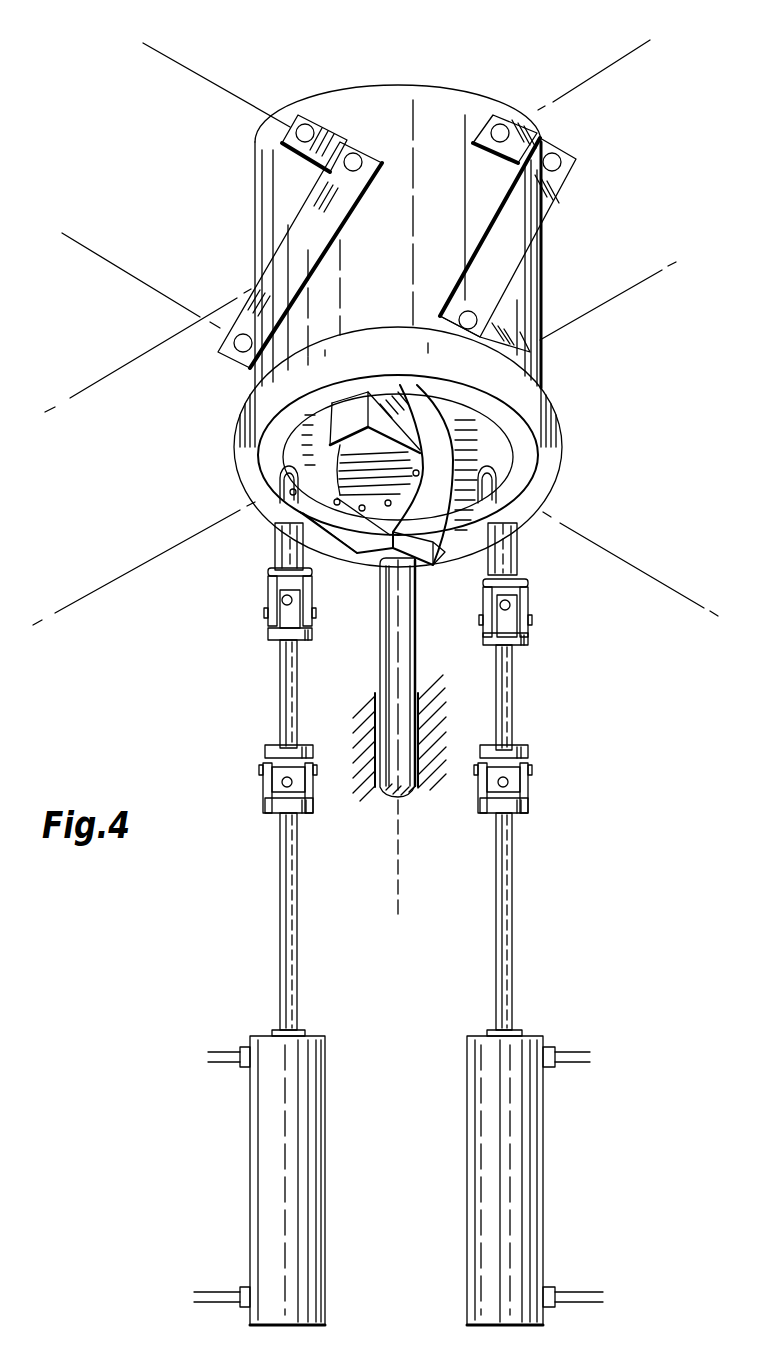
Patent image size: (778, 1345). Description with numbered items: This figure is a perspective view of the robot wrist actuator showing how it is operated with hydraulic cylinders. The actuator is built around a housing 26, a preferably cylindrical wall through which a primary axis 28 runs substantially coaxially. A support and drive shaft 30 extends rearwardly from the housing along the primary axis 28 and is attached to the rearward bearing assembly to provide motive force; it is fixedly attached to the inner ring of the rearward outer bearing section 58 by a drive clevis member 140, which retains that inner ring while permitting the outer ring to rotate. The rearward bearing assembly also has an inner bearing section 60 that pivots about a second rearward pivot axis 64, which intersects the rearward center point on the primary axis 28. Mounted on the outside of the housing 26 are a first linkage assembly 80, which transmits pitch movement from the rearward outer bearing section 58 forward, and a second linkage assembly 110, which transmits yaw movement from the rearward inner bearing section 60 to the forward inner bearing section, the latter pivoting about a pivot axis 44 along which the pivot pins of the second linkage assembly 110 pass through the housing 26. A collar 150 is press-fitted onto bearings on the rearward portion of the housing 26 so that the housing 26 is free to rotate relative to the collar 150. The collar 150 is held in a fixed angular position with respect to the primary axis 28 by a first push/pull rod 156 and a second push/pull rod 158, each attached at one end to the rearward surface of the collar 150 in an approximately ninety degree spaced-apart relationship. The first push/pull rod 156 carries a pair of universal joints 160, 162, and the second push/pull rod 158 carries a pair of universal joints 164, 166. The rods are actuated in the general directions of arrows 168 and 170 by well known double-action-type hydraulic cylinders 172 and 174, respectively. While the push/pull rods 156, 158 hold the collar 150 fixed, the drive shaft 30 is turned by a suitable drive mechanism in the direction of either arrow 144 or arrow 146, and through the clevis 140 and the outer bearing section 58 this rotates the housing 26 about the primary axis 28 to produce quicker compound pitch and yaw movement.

The housing 26 is at (272, 162).
The primary axis 28 is at (405, 832).
The support and drive shaft 30 is at (397, 647).
The pivot axis 44 is at (183, 68).
The outer bearing section 58 is at (478, 452).
The inner bearing section 60 is at (358, 469).
The second rearward pivot axis 64 is at (635, 566).
The first linkage assembly 80 is at (532, 204).
The second linkage assembly 110 is at (291, 266).
The drive clevis member 140 is at (425, 620).
The arrow 144 is at (425, 620).
The arrow 146 is at (370, 677).
The collar 150 is at (553, 472).
The first push/pull rod 156 is at (260, 600).
The second push/pull rod 158 is at (530, 621).
The universal joint 160 is at (283, 603).
The universal joint 162 is at (270, 781).
The universal joint 164 is at (512, 604).
The universal joint 166 is at (530, 795).
The arrow 168 is at (250, 662).
The arrow 170 is at (590, 680).
The hydraulic cylinder 172 is at (262, 1142).
The hydraulic cylinder 174 is at (520, 1138).